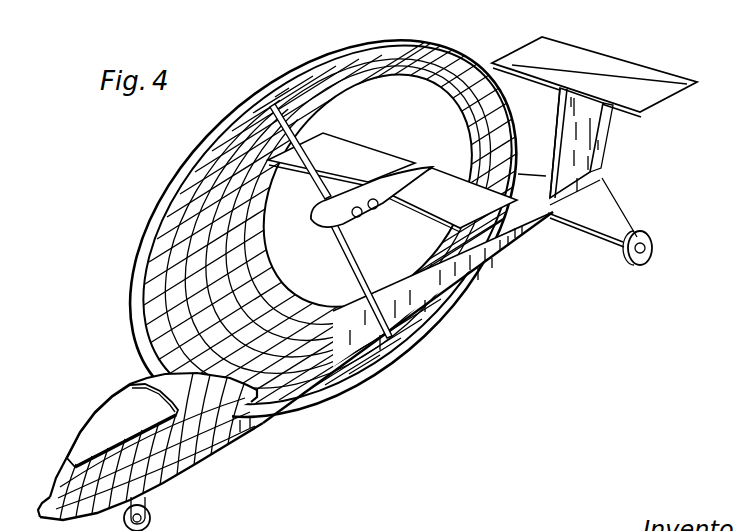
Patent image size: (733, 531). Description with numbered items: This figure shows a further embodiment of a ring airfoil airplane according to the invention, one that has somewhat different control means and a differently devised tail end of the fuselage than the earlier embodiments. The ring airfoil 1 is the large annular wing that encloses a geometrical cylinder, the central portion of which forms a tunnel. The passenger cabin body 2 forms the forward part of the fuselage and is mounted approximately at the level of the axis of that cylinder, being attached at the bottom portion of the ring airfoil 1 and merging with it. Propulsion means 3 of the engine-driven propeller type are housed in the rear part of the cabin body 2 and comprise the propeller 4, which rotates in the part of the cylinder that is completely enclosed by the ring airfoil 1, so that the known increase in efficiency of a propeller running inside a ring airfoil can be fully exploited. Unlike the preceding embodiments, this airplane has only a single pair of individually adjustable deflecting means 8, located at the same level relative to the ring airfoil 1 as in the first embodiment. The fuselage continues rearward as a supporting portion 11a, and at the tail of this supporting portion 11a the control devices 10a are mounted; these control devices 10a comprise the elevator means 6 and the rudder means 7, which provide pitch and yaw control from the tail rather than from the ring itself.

The ring airfoil 1 is at (320, 367).
The passenger cabin body 2 is at (193, 457).
The propulsion means 3 is at (323, 199).
The propeller 4 is at (350, 260).
The elevator means 6 is at (607, 65).
The rudder means 7 is at (603, 146).
The deflecting means 8 is at (363, 152).
The control devices 10a is at (573, 112).
The rearwardly extending supporting portion of the fuselage 11a is at (521, 233).